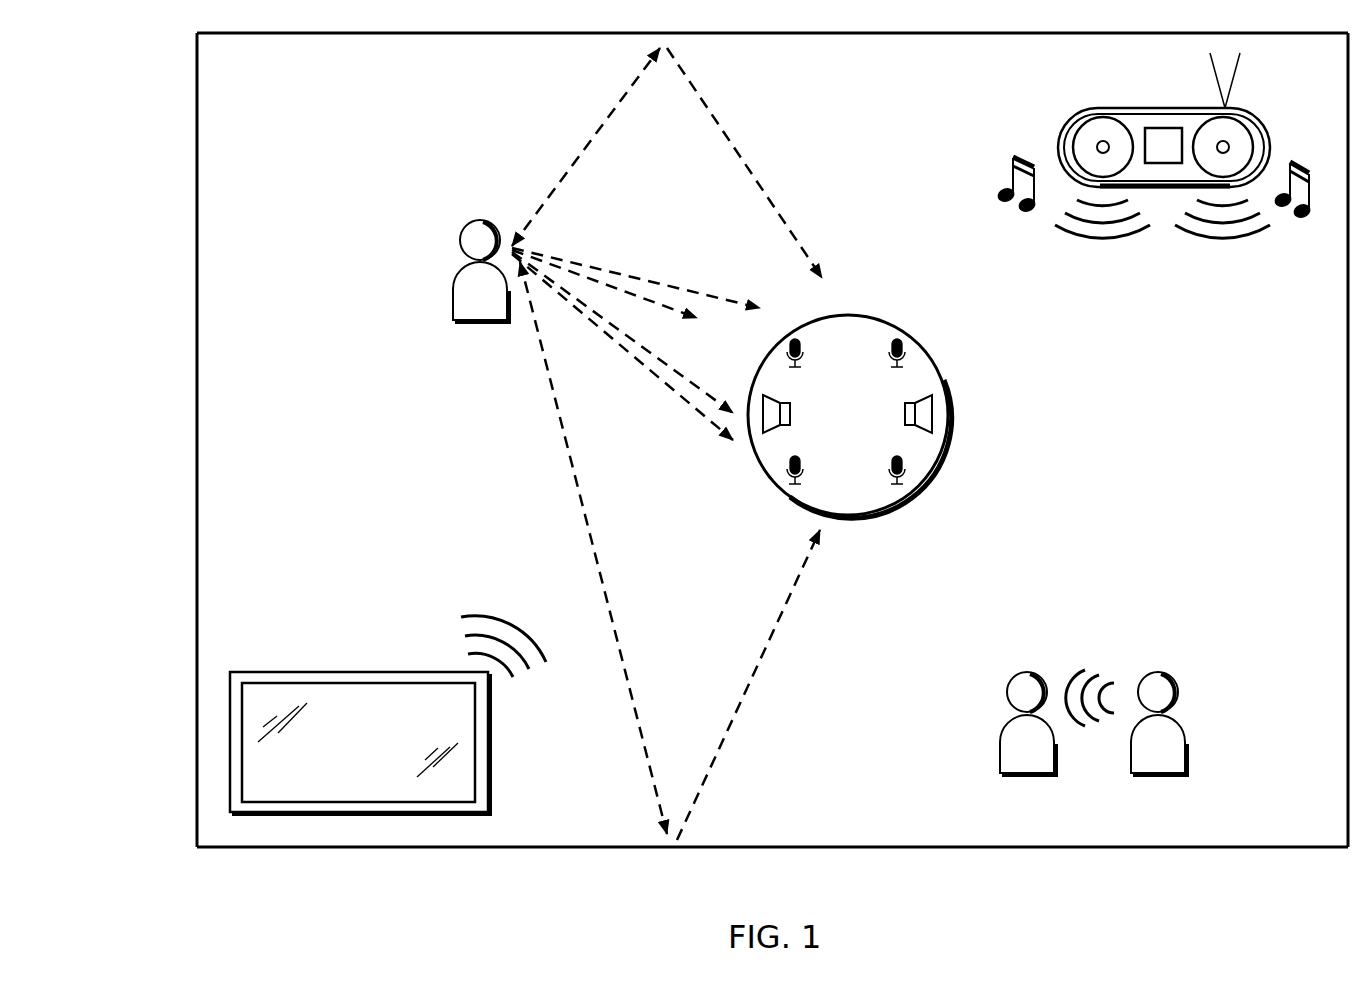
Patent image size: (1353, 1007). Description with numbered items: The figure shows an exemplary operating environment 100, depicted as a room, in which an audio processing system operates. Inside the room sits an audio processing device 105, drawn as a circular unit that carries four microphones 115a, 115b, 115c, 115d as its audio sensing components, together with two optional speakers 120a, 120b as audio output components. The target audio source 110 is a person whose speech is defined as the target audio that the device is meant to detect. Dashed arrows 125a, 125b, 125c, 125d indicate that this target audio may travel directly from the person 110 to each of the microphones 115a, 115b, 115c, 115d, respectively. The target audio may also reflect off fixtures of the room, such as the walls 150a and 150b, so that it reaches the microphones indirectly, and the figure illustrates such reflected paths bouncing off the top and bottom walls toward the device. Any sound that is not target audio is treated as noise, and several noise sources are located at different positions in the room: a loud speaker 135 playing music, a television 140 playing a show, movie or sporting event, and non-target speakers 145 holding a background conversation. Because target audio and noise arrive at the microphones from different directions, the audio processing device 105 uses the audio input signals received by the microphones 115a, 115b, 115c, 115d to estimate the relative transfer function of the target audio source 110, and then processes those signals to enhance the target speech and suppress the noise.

The operating environment 100 is at (142, 88).
The audio processing device 105 is at (857, 312).
The target audio source 110 is at (460, 238).
The microphone 115a is at (806, 360).
The microphone 115b is at (899, 338).
The microphone 115c is at (806, 466).
The microphone 115d is at (898, 482).
The speaker 120a is at (770, 430).
The speaker 120b is at (936, 405).
The arrow 125a is at (618, 268).
The arrow 125b is at (643, 297).
The arrow 125c is at (700, 385).
The arrow 125d is at (658, 378).
The loud speaker 135 is at (1092, 108).
The television 140 is at (357, 672).
The non-target speakers 145 is at (1188, 723).
The wall 150a is at (910, 35).
The wall 150b is at (892, 824).